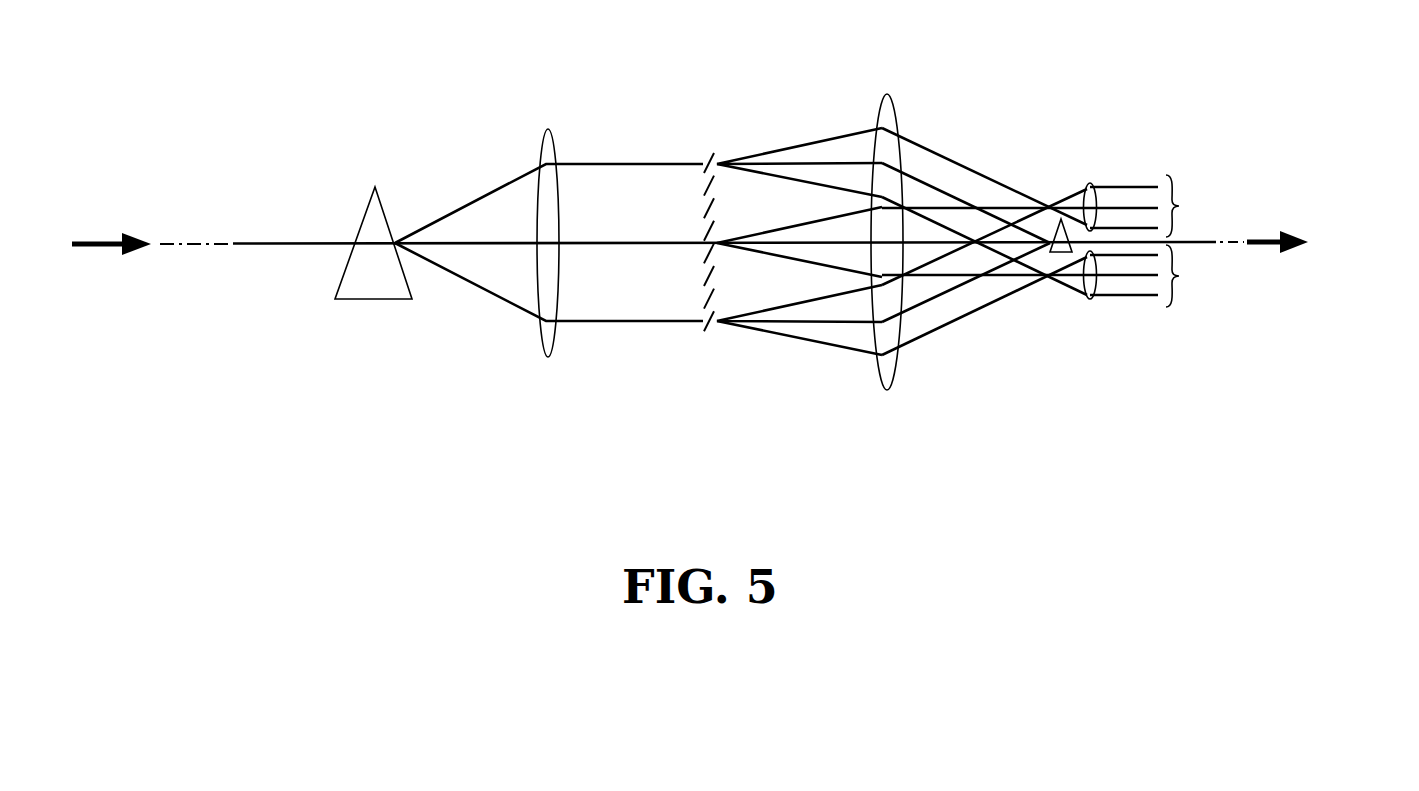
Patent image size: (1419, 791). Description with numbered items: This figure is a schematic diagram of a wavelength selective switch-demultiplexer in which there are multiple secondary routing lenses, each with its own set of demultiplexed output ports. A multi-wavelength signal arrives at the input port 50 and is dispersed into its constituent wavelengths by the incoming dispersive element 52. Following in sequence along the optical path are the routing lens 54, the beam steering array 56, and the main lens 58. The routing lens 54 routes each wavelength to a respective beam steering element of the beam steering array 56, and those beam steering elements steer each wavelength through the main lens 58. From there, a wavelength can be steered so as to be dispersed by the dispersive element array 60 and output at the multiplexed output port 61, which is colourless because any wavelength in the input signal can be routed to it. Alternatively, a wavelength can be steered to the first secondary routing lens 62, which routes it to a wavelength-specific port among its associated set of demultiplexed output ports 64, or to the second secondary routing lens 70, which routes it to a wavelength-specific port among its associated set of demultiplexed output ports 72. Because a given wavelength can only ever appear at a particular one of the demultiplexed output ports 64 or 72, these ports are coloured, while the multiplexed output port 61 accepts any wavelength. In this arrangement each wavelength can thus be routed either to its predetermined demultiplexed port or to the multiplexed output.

The input port 50 is at (89, 240).
The incoming dispersive element 52 is at (373, 313).
The routing lens 54 is at (546, 114).
The beam steering array 56 is at (708, 357).
The main lens 58 is at (897, 108).
The dispersive element array 60 is at (1054, 266).
The multiplexed output port 61 is at (1262, 244).
The secondary routing lens 62 is at (1090, 158).
The demultiplexed output ports 64 is at (1179, 206).
The second secondary routing lens 70 is at (1090, 318).
The demultiplexed output ports 72 is at (1149, 276).